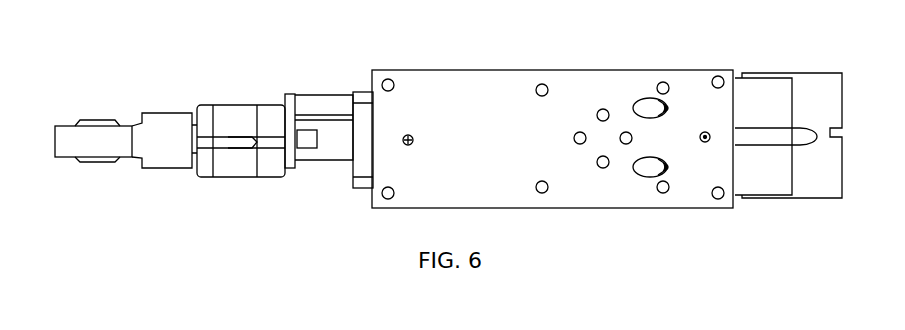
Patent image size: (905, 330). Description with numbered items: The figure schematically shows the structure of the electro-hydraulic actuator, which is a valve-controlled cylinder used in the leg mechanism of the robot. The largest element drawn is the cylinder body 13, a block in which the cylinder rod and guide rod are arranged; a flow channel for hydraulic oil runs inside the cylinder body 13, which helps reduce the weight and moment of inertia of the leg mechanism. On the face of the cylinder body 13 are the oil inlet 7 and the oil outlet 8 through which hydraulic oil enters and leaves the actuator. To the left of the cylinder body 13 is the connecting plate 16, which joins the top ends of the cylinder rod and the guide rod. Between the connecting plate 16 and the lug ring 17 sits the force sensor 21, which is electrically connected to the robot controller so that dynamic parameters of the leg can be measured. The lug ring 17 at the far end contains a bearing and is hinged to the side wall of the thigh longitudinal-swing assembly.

The lug ring 17 is at (163, 135).
The force sensor 21 is at (235, 117).
The connecting plate 16 is at (288, 98).
The cylinder body 13 is at (435, 87).
The oil inlet 7 is at (647, 167).
The oil outlet 8 is at (647, 107).